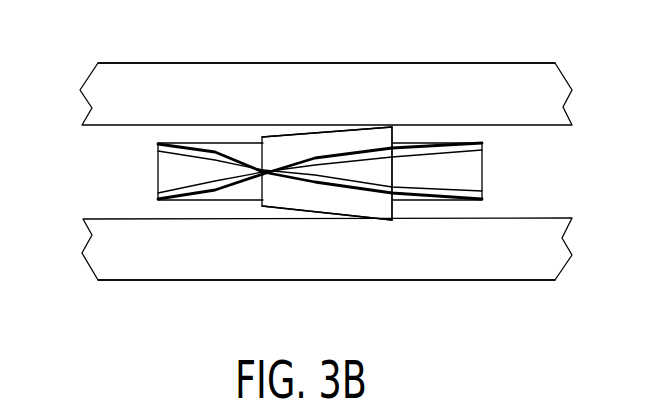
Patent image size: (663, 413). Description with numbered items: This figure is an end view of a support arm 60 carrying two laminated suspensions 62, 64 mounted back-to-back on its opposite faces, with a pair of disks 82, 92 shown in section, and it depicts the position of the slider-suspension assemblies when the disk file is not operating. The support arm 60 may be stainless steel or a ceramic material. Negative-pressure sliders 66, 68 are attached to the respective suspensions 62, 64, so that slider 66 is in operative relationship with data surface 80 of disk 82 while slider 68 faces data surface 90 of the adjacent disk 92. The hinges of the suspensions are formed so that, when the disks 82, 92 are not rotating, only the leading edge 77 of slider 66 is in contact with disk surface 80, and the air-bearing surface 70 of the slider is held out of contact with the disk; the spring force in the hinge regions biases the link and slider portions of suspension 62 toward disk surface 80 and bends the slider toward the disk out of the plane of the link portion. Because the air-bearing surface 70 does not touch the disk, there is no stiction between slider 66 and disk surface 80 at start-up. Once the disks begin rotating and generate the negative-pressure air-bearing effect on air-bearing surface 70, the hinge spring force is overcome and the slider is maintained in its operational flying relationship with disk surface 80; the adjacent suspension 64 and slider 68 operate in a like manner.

The support arm 60 is at (167, 178).
The laminated suspension 62 is at (483, 151).
The laminated suspension 64 is at (483, 188).
The negative-pressure slider 66 is at (380, 138).
The negative-pressure slider 68 is at (383, 207).
The air-bearing surface 70 is at (302, 130).
The leading edge 77 is at (390, 126).
The data surface 80 is at (112, 125).
The disk 82 is at (117, 75).
The data surface 90 is at (112, 219).
The disk 92 is at (152, 258).